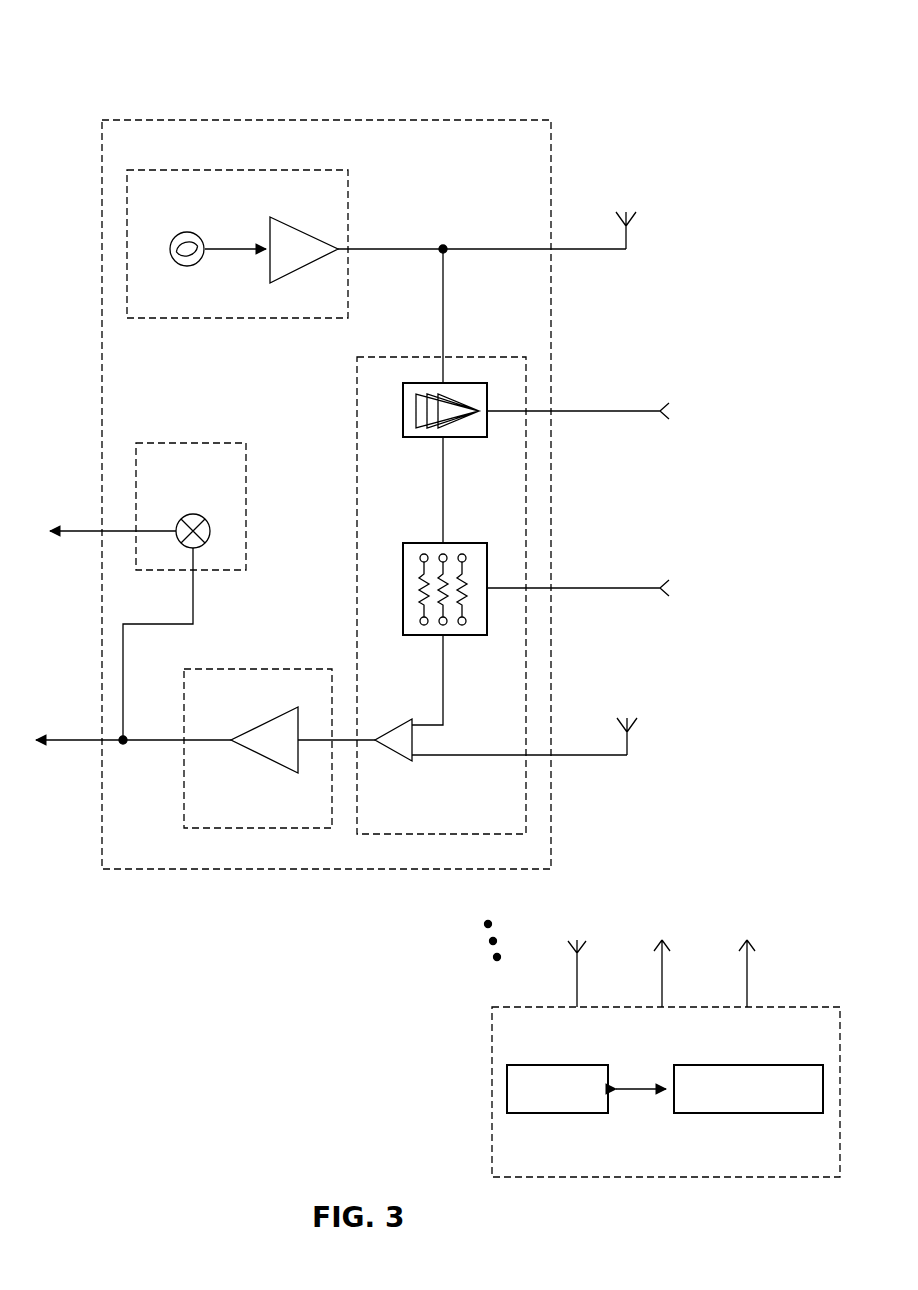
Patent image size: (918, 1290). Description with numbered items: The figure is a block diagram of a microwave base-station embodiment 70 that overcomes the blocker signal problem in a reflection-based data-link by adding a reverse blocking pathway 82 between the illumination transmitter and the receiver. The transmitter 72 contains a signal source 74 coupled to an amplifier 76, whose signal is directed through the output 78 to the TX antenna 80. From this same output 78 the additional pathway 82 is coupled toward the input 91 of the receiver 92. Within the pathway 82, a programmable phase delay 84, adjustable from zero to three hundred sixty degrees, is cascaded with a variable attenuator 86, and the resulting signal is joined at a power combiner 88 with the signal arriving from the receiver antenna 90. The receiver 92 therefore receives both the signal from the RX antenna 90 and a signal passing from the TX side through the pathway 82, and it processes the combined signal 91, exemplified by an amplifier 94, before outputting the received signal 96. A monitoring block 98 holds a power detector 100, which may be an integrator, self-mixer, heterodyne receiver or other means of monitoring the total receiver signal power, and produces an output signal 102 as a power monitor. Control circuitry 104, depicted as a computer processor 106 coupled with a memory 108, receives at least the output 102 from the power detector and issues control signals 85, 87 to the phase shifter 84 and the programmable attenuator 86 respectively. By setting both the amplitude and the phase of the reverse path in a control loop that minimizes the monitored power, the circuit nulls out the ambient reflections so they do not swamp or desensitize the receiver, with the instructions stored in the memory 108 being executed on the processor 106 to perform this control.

The base-station embodiment 70 is at (146, 50).
The transmitter 72 is at (210, 170).
The signal source 74 is at (187, 267).
The amplifier 76 is at (312, 268).
The output 78 is at (421, 248).
The antenna 80 is at (636, 224).
The reverse blocking pathway 82 is at (357, 426).
The programmable phase delay 84 is at (462, 383).
The control signal 85 is at (598, 411).
The variable attenuator 86 is at (458, 543).
The control signal 87 is at (598, 588).
The power combiner 88 is at (386, 733).
The receiver antenna 90 is at (637, 730).
The input 91 is at (343, 742).
The receiver 92 is at (290, 669).
The amplifier 94 is at (252, 757).
The received signal 96 is at (66, 742).
The monitoring block 98 is at (193, 443).
The power detector 100 is at (200, 548).
The output signal 102 is at (75, 533).
The control circuitry 104 is at (623, 1049).
The computer processor (CPU) 106 is at (560, 1113).
The memory 108 is at (715, 1113).